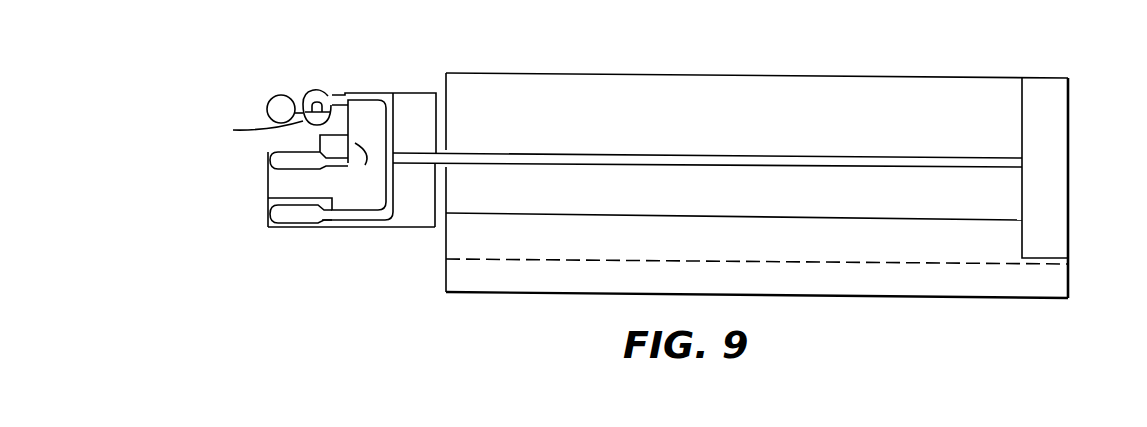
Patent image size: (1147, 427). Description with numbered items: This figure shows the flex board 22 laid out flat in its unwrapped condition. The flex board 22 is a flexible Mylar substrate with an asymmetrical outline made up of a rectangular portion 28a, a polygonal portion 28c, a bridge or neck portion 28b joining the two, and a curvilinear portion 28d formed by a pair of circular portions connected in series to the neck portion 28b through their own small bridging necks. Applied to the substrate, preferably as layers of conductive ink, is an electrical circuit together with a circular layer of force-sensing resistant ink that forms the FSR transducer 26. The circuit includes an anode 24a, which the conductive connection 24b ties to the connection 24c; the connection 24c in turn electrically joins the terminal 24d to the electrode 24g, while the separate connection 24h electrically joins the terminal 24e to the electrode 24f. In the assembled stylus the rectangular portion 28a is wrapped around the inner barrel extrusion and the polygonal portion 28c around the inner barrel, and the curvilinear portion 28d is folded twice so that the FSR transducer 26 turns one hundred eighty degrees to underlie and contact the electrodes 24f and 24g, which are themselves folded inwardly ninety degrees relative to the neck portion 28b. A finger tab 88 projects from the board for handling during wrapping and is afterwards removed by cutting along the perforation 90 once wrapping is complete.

The flex board 22 is at (1127, 76).
The anode 24a is at (1048, 192).
The conductive connection 24b is at (828, 145).
The conductive connection 24c is at (395, 112).
The terminal 24d is at (290, 227).
The terminal 24e is at (280, 172).
The electrode 24f is at (237, 137).
The electrode 24g is at (317, 88).
The conductive connection 24h is at (345, 172).
The FSR transducer 26 is at (277, 98).
The rectangular portion 28a is at (843, 62).
The bridge or neck portion 28b is at (440, 150).
The polygonal portion 28c is at (355, 227).
The curvilinear portion 28d is at (290, 66).
The finger tab 88 is at (808, 287).
The perforation 90 is at (548, 262).